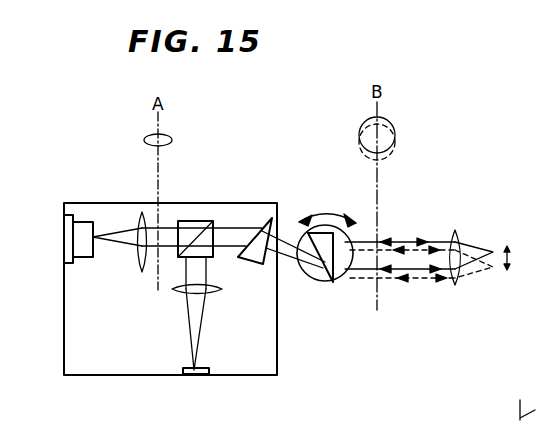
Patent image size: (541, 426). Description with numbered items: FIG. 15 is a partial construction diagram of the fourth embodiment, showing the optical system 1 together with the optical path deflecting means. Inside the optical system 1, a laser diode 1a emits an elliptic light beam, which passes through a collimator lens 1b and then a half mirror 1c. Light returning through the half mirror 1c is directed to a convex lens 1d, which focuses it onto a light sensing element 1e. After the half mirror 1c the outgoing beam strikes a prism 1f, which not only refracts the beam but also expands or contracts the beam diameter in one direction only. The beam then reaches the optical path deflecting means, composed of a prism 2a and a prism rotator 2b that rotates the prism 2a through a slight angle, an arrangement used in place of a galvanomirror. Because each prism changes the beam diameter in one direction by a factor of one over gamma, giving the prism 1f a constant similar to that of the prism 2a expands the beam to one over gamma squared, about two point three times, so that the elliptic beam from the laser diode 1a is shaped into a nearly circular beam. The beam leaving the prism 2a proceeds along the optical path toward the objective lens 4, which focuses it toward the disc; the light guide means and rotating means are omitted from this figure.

The optical system 1 is at (100, 203).
The laser diode 1a is at (87, 252).
The collimator lens 1b is at (142, 272).
The half mirror 1c is at (199, 218).
The convex lens 1d is at (222, 289).
The light sensing element 1e is at (200, 375).
The prism 1f is at (272, 218).
The prism 2a is at (328, 277).
The prism rotator 2b is at (315, 282).
The objective lens 4 is at (455, 230).